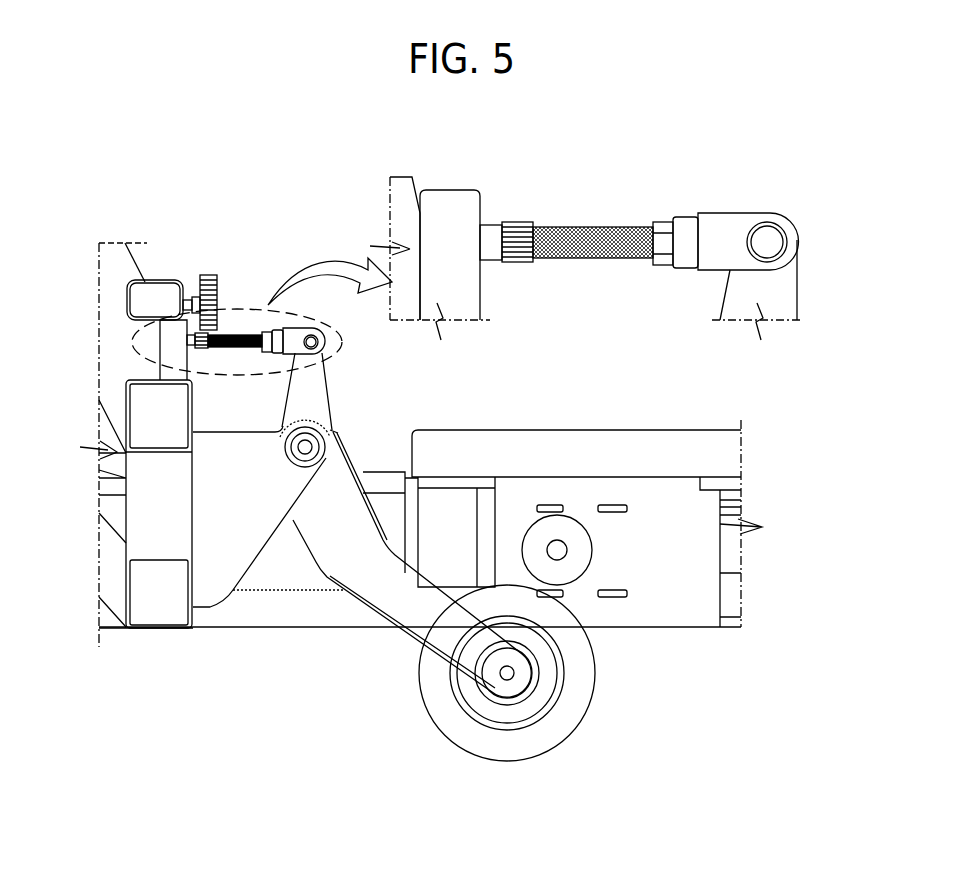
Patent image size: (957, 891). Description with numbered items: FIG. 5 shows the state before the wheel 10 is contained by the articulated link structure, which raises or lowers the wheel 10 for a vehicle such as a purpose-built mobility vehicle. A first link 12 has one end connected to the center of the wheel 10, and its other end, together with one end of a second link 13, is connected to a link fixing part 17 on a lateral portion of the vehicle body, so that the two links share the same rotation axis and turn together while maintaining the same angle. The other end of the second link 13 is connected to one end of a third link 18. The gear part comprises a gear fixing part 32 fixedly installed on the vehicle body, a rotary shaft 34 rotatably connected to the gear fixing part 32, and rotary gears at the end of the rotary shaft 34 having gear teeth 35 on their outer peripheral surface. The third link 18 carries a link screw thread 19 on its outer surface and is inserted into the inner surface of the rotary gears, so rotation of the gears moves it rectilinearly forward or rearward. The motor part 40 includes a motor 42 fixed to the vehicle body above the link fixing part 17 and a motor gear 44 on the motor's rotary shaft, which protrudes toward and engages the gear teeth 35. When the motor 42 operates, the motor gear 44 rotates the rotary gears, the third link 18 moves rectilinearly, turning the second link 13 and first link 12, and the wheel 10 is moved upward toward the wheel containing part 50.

The wheel 10 is at (585, 687).
The first link 12 is at (397, 627).
The second link 13 is at (313, 393).
The link fixing part 17 is at (230, 543).
The third link 18 is at (727, 215).
The link screw thread 19 is at (600, 228).
The gear fixing part 32 is at (448, 198).
The rotary shaft 34 is at (489, 228).
The gear teeth 35 is at (518, 225).
The motor part 40 is at (234, 285).
The motor 42 is at (160, 280).
The motor gear 44 is at (218, 279).
The wheel containing part 50 is at (698, 597).